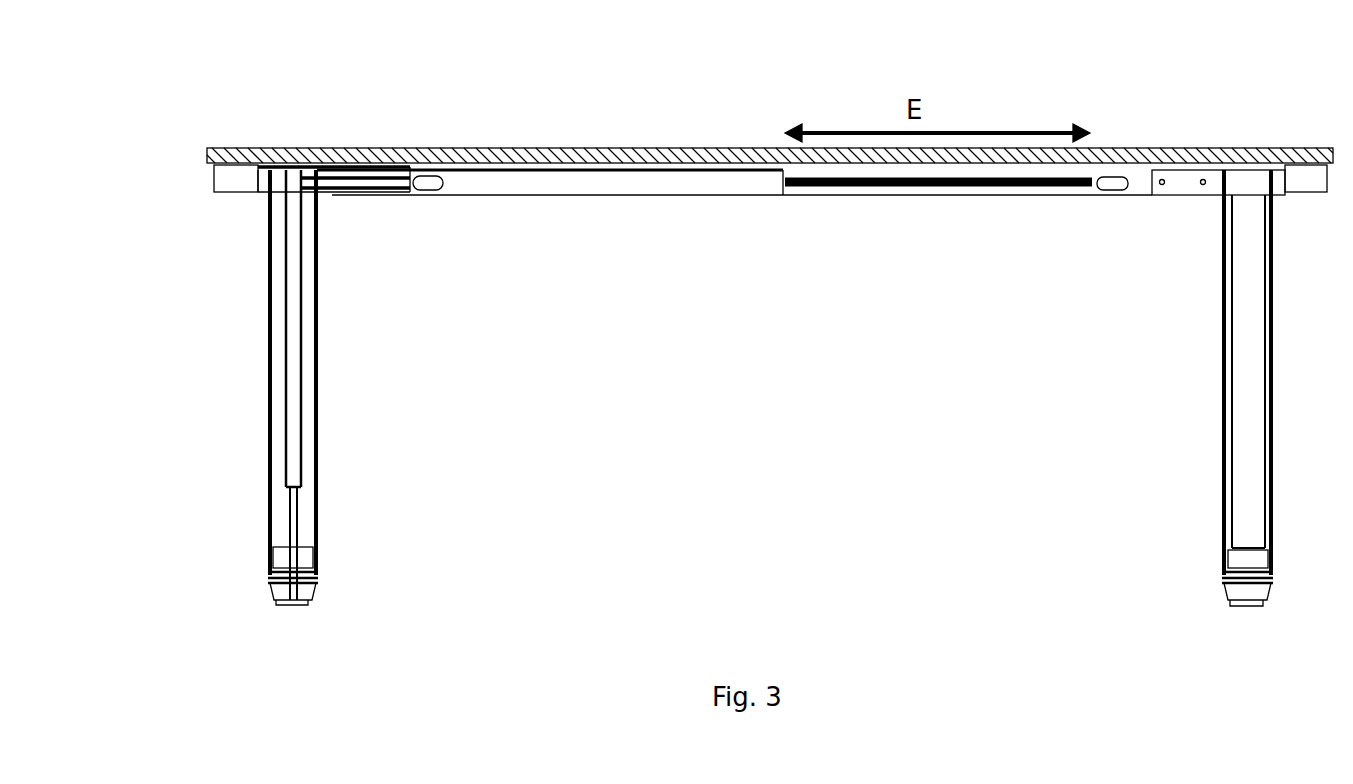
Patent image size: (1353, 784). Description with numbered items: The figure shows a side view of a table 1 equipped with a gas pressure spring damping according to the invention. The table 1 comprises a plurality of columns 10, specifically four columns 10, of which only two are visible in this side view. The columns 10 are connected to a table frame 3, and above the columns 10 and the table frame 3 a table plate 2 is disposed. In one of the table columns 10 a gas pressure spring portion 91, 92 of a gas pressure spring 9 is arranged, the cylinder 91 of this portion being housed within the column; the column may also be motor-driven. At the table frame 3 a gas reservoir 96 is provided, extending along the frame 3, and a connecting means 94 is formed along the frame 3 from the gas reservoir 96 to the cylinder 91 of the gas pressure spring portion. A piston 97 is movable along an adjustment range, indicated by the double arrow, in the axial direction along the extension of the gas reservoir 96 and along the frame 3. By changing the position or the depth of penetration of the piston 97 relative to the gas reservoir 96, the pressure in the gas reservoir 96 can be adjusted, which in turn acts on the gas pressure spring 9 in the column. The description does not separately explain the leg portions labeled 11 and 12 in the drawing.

The table 1 is at (880, 485).
The table plate 2 is at (770, 90).
The table frame 3 is at (774, 243).
The gas pressure spring 9 is at (350, 396).
The column 10 is at (258, 394).
The outer leg tube 11 is at (227, 373).
The inner leg tube 12 is at (229, 520).
The cylinder 91 is at (348, 342).
The gas pressure spring portion 92 is at (352, 554).
The connecting means 94 is at (350, 242).
The gas reservoir 96 is at (734, 258).
The piston 97 is at (956, 266).